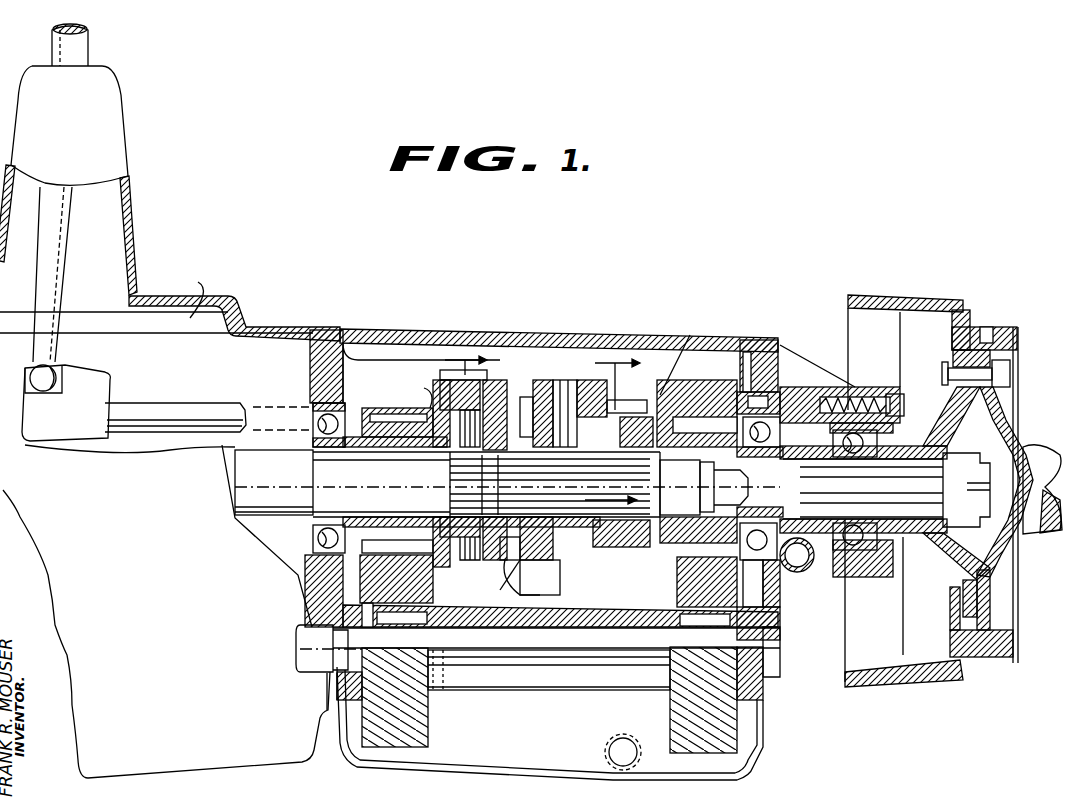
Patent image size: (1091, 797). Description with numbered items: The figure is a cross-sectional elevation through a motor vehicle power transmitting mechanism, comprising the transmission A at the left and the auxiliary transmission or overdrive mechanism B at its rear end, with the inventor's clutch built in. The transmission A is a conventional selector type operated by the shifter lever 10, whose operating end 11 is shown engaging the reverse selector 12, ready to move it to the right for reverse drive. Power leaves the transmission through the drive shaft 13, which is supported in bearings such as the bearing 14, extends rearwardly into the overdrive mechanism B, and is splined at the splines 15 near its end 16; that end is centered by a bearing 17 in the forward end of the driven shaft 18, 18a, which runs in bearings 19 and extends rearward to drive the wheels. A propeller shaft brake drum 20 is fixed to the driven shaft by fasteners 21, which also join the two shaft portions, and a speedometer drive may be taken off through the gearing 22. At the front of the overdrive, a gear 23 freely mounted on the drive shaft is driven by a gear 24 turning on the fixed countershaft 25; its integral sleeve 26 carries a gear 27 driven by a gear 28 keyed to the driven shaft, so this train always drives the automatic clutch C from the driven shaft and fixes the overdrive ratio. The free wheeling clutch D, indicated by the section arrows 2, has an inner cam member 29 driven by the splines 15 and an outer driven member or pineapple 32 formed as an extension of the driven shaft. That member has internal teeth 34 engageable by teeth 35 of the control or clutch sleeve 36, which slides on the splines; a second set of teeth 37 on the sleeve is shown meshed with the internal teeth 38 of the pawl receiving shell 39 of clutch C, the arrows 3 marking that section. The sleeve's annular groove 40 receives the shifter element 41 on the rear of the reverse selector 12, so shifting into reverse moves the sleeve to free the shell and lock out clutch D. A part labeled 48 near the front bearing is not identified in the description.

The shifter lever 10 is at (88, 42).
The operating end 11 is at (58, 362).
The reverse selector 12 is at (125, 400).
The drive shaft 13 is at (235, 520).
The bearing 14 is at (315, 412).
The splines 15 is at (450, 490).
The end of drive shaft 16 is at (704, 487).
The bearing 17 is at (686, 447).
The driven shaft 18 is at (885, 489).
The driven shaft portion 18a is at (1033, 462).
The bearings 19 is at (850, 560).
The propeller shaft brake drum 20 is at (920, 297).
The fasteners 21 is at (1005, 372).
The speedometer drive gearing 22 is at (792, 572).
The gear 23 is at (395, 412).
The gear 24 is at (412, 715).
The countershaft 25 is at (515, 640).
The sleeve 26 is at (562, 680).
The gear 27 is at (668, 720).
The gear 28 is at (735, 413).
The inner cam member 29 is at (720, 395).
The driven free wheeling member 32 is at (590, 395).
The internal jaws or teeth 34 is at (560, 395).
The jaws or teeth 35 is at (548, 380).
The control or clutch sleeve 36 is at (548, 618).
The jaws or teeth 37 is at (518, 585).
The internal teeth 38 is at (520, 400).
The pawl receiving structure or shell 39 is at (475, 390).
The annular groove 40 is at (535, 565).
The shifter element 41 is at (505, 395).
The sleeve 48 is at (438, 447).
The transmission A is at (189, 293).
The auxiliary transmission or overdrive mechanism B is at (452, 340).
The automatic clutch C is at (428, 470).
The overrunning or free wheeling clutch D is at (679, 353).
The section line 2 is at (620, 431).
The section line 3 is at (482, 482).